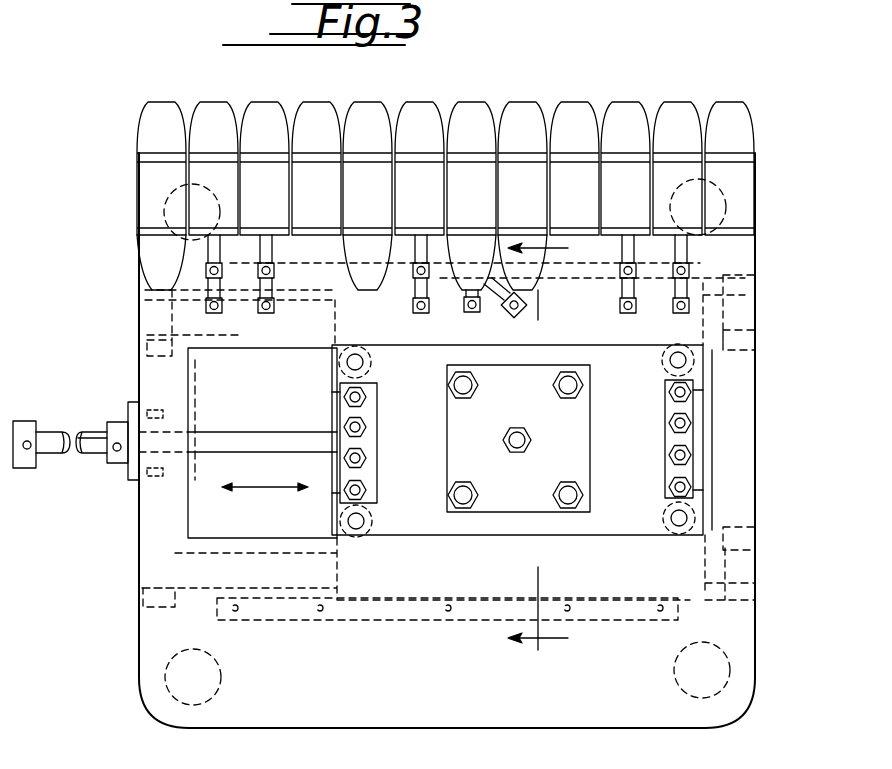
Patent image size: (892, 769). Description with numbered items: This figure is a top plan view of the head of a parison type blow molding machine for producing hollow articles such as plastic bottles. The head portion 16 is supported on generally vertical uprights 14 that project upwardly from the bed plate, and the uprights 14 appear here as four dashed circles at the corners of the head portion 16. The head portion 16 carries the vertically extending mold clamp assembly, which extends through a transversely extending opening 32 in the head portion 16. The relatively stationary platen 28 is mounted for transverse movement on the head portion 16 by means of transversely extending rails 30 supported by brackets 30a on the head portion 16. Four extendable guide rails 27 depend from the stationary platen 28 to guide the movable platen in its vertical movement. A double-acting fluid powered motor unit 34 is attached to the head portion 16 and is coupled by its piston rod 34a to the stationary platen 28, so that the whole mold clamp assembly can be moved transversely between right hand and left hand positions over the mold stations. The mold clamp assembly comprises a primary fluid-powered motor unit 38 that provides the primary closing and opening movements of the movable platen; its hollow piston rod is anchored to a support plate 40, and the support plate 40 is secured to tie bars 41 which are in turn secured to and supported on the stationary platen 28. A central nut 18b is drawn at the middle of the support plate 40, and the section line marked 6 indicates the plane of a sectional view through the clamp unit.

The uprights 14 is at (162, 208).
The head portion 16 is at (476, 690).
The center nut 18b is at (517, 426).
The extendable guide rails 27 is at (372, 356).
The stationary platen 28 is at (380, 440).
The transversely extending rails 30 is at (248, 338).
The brackets 30a is at (148, 295).
The transversely extending opening 32 is at (263, 350).
The double-acting fluid powered motor unit 34 is at (92, 458).
The piston rod 34a is at (268, 438).
The primary fluid-powered motor unit 38 is at (593, 440).
The support plate 40 is at (584, 410).
The tie bars 41 is at (452, 382).
The section line 6- 6 is at (518, 444).